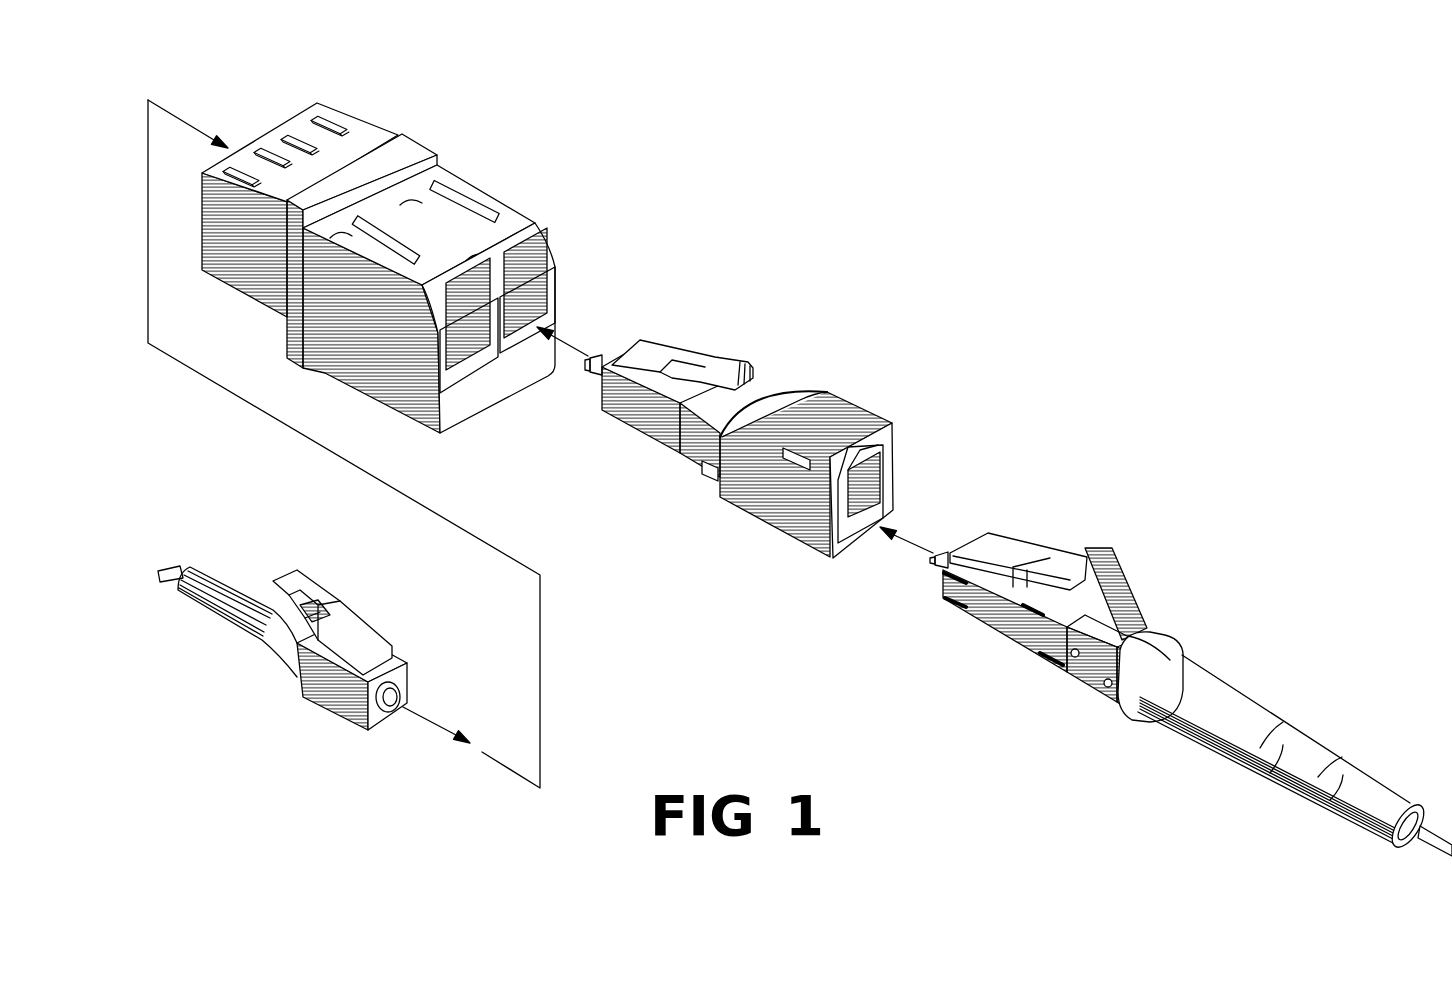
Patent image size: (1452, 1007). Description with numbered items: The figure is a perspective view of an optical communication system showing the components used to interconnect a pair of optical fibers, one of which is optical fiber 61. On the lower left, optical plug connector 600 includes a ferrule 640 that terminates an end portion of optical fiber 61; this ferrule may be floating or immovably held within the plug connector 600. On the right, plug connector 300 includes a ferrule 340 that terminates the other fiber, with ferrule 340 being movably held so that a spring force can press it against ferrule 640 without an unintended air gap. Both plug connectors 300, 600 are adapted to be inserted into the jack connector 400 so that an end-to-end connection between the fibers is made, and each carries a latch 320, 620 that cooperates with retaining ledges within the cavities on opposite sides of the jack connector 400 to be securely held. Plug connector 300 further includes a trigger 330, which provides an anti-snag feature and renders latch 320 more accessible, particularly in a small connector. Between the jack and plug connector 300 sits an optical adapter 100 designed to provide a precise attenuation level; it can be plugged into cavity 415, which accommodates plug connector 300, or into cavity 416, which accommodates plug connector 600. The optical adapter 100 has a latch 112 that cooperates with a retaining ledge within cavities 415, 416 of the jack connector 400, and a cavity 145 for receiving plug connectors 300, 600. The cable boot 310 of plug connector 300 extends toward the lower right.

The cavity 416 is at (230, 130).
The jack connector 400 is at (411, 264).
The cavity 415 is at (537, 302).
The optical adapter 100 is at (771, 434).
The latch 112 is at (655, 348).
The cavity 145 is at (877, 500).
The plug connector 300 is at (1165, 708).
The latch 320 is at (1063, 557).
The trigger 330 is at (1117, 578).
The ferrule 340 is at (940, 558).
The cable boot 310 is at (1450, 857).
The plug connector 600 is at (314, 654).
The latch 620 is at (305, 587).
The ferrule 640 is at (393, 710).
The optical fiber 61 is at (172, 567).